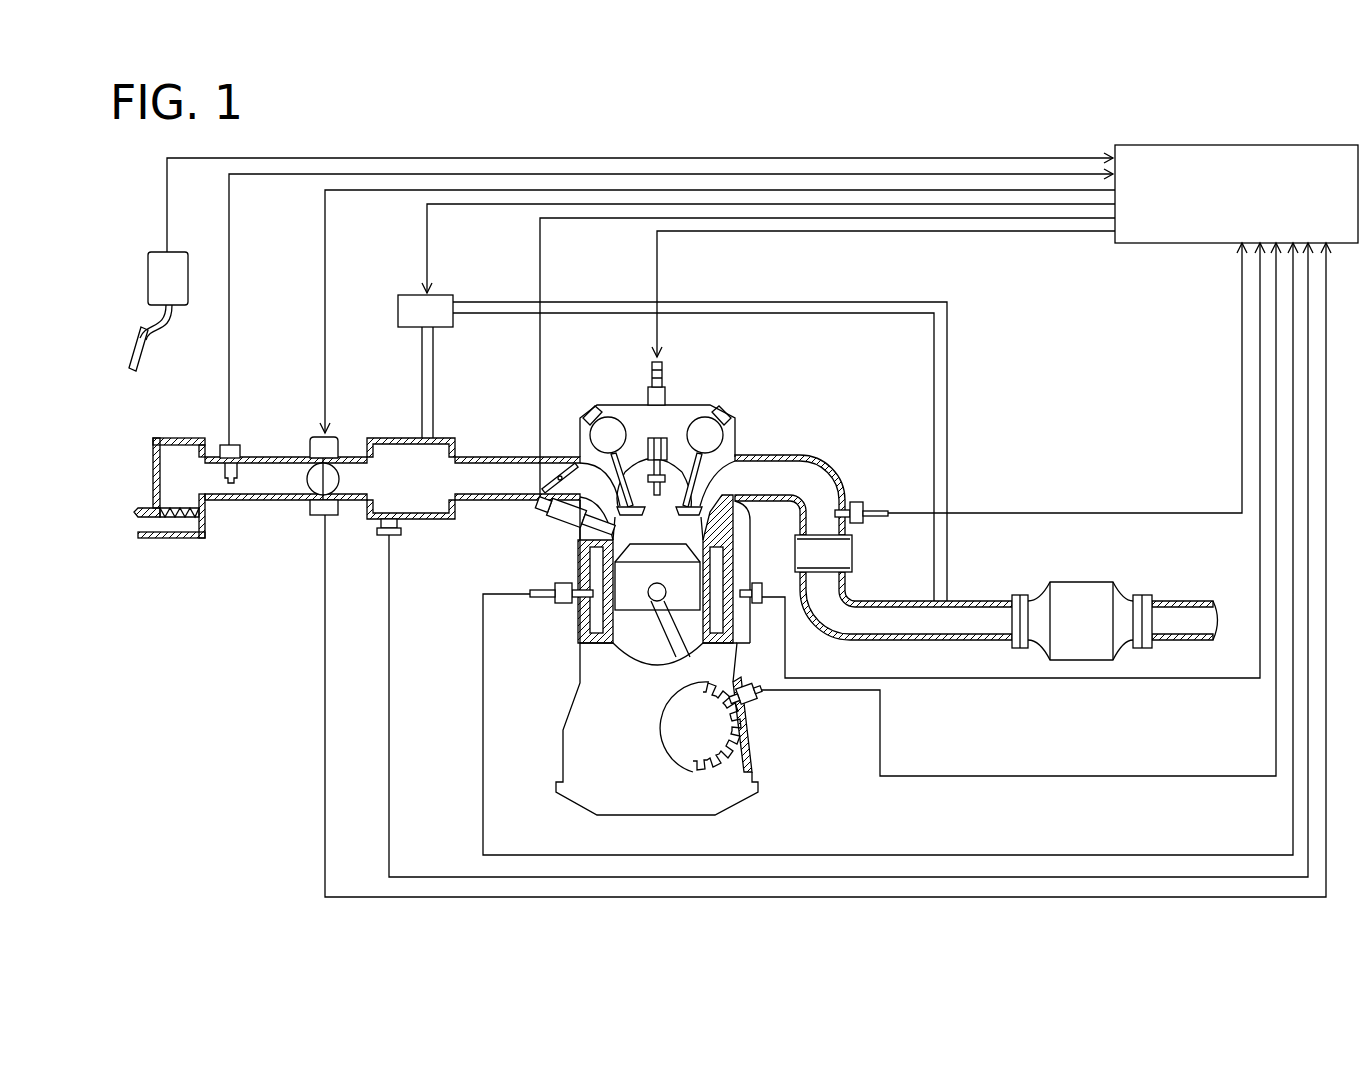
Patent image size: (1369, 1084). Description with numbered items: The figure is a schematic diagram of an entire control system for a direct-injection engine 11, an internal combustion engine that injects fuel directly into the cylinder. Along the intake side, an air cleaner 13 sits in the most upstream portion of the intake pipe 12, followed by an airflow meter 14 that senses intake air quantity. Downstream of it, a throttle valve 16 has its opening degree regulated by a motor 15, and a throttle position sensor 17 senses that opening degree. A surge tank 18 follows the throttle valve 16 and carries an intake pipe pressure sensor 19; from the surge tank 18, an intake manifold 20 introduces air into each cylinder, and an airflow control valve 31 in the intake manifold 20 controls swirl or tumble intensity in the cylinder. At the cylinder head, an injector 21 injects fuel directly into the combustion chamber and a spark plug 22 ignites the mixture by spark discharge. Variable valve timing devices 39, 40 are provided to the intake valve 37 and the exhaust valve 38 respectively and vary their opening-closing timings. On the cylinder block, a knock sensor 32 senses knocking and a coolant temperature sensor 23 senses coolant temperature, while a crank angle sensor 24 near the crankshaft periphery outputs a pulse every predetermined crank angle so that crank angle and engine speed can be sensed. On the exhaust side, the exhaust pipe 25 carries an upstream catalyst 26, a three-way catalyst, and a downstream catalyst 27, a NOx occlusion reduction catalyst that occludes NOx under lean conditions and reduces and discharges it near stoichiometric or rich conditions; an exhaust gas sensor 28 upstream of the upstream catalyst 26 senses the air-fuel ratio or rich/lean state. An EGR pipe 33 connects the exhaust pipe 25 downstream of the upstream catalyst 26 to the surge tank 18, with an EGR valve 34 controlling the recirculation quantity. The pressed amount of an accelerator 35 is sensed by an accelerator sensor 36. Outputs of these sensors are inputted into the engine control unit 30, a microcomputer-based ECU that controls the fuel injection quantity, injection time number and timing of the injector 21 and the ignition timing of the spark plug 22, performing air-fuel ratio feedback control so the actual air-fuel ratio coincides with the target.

The direct-injection engine 11 is at (733, 410).
The intake pipe 12 is at (256, 457).
The air cleaner 13 is at (178, 520).
The airflow meter 14 is at (228, 445).
The motor 15 is at (312, 437).
The throttle valve 16 is at (340, 467).
The throttle position sensor 17 is at (310, 515).
The surge tank 18 is at (432, 520).
The intake pipe pressure sensor 19 is at (392, 536).
The intake manifold 20 is at (493, 457).
The injector 21 is at (550, 522).
The spark plug 22 is at (665, 440).
The coolant temperature sensor 23 is at (550, 604).
The crank angle sensor 24 is at (762, 696).
The exhaust pipe 25 is at (822, 455).
The upstream catalyst 26 is at (853, 551).
The downstream catalyst 27 is at (1100, 582).
The exhaust gas sensor 28 is at (858, 500).
The engine control unit 30 is at (1140, 243).
The airflow control valve 31 is at (553, 462).
The knock sensor 32 is at (757, 580).
The EGR pipe 33 is at (489, 302).
The EGR valve 34 is at (402, 295).
The accelerator 35 is at (142, 337).
The accelerator sensor 36 is at (172, 252).
The intake valve 37 is at (583, 552).
The exhaust valve 38 is at (770, 456).
The variable valve timing device 39 is at (608, 417).
The variable valve timing device 40 is at (723, 427).